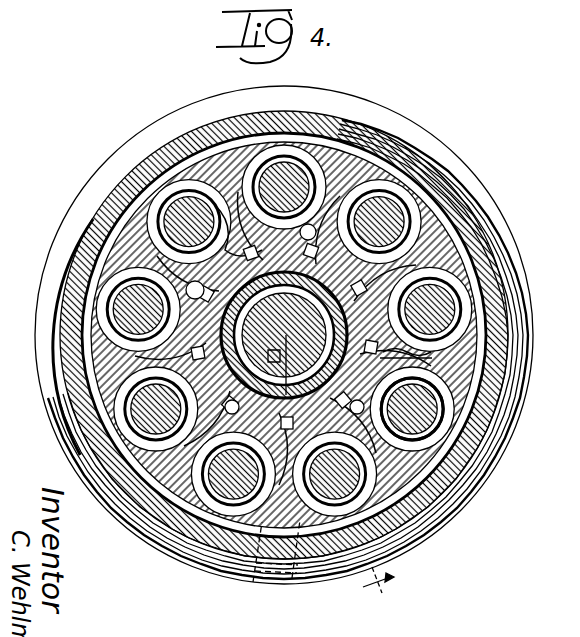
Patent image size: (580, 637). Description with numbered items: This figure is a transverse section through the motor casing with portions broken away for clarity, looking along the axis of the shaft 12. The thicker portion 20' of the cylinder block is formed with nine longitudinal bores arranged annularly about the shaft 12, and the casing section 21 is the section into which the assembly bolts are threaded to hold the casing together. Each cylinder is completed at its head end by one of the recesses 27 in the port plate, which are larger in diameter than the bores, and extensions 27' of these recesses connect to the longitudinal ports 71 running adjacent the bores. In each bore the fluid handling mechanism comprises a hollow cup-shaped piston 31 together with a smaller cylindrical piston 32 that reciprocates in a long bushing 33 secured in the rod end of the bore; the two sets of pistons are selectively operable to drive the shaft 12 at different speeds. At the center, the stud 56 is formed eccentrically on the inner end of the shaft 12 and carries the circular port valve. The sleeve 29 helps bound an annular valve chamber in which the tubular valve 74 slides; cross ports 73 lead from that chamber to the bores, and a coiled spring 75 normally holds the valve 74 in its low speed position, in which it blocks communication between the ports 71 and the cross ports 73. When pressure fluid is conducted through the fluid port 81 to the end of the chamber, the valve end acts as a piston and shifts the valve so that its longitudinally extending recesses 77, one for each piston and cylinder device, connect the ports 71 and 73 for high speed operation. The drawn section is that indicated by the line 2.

The section line 2 is at (338, 468).
The shaft 12 is at (284, 326).
The thicker portion of cylinder block section 20' is at (287, 335).
The casing section 21 is at (497, 265).
The recesses 27 is at (313, 314).
The extensions of the recesses 27' is at (238, 230).
The sleeve 29 is at (284, 344).
The cup-shaped pistons 31 is at (145, 188).
The cylindrical pistons 32 is at (175, 222).
The bushings 33 is at (433, 400).
The stud 56 is at (195, 290).
The ports 71 is at (410, 354).
The cross ports 73 is at (120, 380).
The tubular valve 74 is at (125, 320).
The coiled spring 75 is at (284, 335).
The longitudinally extending recesses 77 is at (271, 360).
The fluid port 81 is at (266, 562).